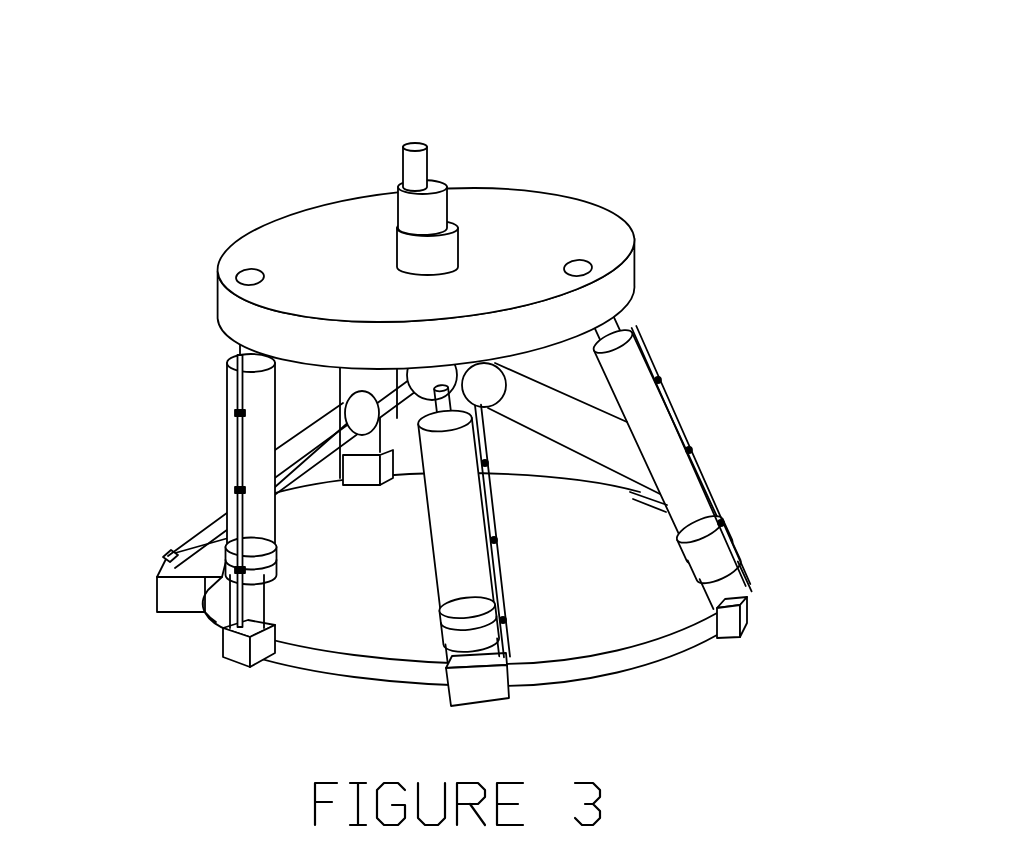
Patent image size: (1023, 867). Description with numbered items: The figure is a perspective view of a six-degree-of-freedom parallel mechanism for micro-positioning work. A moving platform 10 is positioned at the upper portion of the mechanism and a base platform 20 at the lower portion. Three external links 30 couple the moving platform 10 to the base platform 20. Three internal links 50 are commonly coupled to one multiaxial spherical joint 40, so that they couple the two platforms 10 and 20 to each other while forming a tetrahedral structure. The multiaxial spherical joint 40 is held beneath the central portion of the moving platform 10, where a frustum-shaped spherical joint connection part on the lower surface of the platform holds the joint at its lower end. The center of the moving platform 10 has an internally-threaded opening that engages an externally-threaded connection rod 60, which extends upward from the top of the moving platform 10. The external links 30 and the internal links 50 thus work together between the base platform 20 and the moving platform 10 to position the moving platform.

The moving platform 10 is at (515, 227).
The base platform 20 is at (913, 553).
The external links 30 is at (635, 378).
The multiaxial spherical joint 40 is at (468, 410).
The internal links 50 is at (463, 572).
The connection rod 60 is at (418, 210).